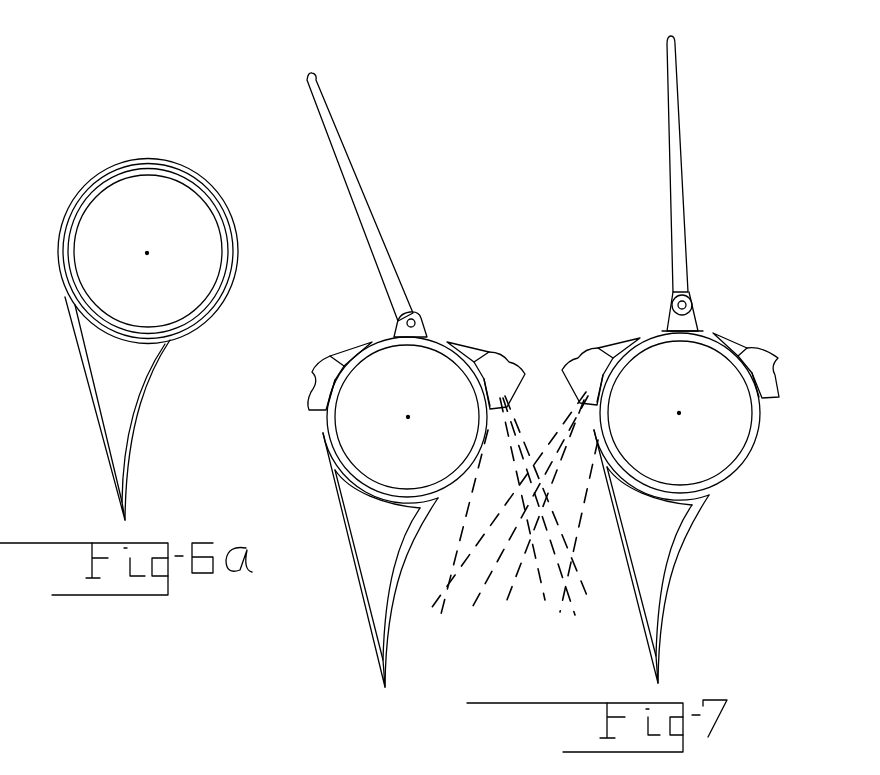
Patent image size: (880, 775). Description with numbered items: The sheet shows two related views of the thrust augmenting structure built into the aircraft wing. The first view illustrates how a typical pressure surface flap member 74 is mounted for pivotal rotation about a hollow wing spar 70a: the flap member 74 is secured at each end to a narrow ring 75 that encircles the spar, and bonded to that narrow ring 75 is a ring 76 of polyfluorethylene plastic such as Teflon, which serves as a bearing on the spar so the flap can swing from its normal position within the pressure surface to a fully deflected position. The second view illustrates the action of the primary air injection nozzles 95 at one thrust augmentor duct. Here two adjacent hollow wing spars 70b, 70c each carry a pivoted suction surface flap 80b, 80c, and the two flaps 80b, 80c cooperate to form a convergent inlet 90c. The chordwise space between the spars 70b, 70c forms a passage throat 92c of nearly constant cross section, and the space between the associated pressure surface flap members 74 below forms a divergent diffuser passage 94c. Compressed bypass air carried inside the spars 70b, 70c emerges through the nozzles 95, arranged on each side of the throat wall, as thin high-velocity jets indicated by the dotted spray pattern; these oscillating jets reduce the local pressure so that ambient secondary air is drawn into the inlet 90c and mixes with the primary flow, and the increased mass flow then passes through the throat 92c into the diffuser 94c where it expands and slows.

In FIG. 6A, the ring of polyfluorethylene plastic 76 is at (192, 178).
In FIG. 6A, the narrow ring 75 is at (233, 214).
In FIG. 6A, the hollow wing spar 70a is at (215, 287).
In FIG. 6A, the flap member 74 is at (84, 373).
In FIG. 7, the flap member 74 is at (345, 543).
In FIG. 7, the suction surface flap 80b is at (348, 138).
In FIG. 7, the suction surface flap 80c is at (686, 118).
In FIG. 7, the hollow wing spar 70b is at (446, 478).
In FIG. 7, the hollow wing spar 70c is at (712, 468).
In FIG. 7, the primary air injection nozzle 95 is at (316, 360).
In FIG. 7, the convergent inlet 90c is at (552, 189).
In FIG. 7, the passage throat 92c is at (568, 349).
In FIG. 7, the divergent diffuser passage 94c is at (526, 628).